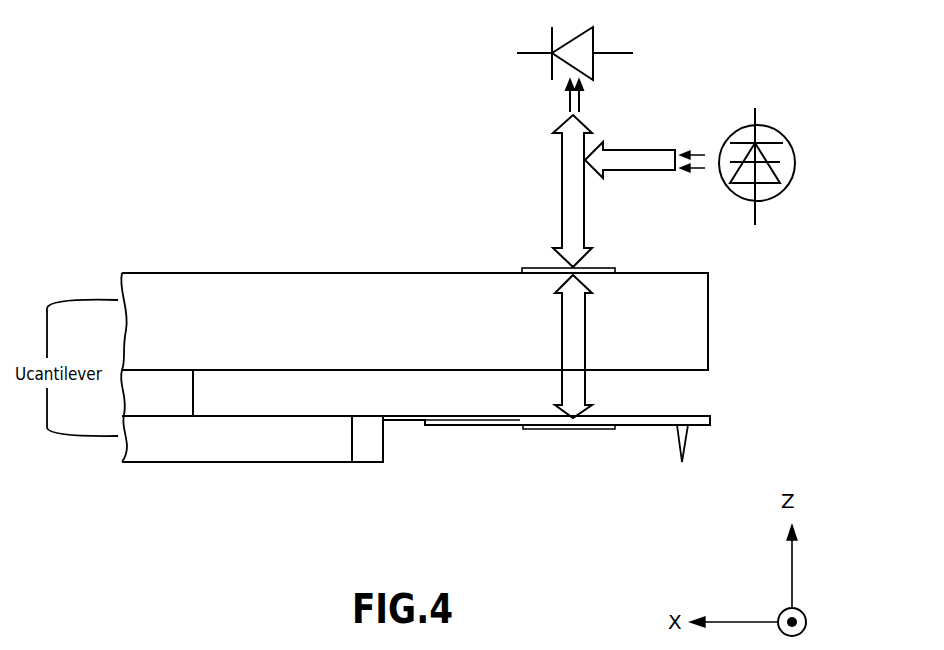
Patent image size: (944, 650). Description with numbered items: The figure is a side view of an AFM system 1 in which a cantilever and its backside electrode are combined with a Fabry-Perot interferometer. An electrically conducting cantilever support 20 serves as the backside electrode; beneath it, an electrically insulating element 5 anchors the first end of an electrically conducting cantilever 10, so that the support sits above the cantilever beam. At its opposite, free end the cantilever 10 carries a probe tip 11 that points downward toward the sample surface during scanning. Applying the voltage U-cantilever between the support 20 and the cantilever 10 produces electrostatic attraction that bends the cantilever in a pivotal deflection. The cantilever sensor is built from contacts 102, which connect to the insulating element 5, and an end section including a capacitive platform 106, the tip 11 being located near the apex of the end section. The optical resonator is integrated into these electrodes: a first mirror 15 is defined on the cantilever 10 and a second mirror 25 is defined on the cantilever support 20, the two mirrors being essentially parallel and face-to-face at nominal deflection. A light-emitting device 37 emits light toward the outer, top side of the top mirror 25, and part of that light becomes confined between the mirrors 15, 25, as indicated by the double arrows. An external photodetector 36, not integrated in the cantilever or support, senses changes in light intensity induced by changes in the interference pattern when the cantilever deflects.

The AFM system 1 is at (128, 510).
The electrically insulating element 5 is at (182, 401).
The electrically conducting cantilever 10 is at (447, 427).
The probe tip 11 is at (690, 445).
The first mirror 15 is at (603, 430).
The electrically conducting cantilever support 20 is at (343, 272).
The second mirror 25 is at (520, 271).
The photodetector 36 is at (554, 124).
The light-emitting device 37 is at (783, 193).
The contacts 102 is at (241, 463).
The capacitive platform 106 is at (475, 422).